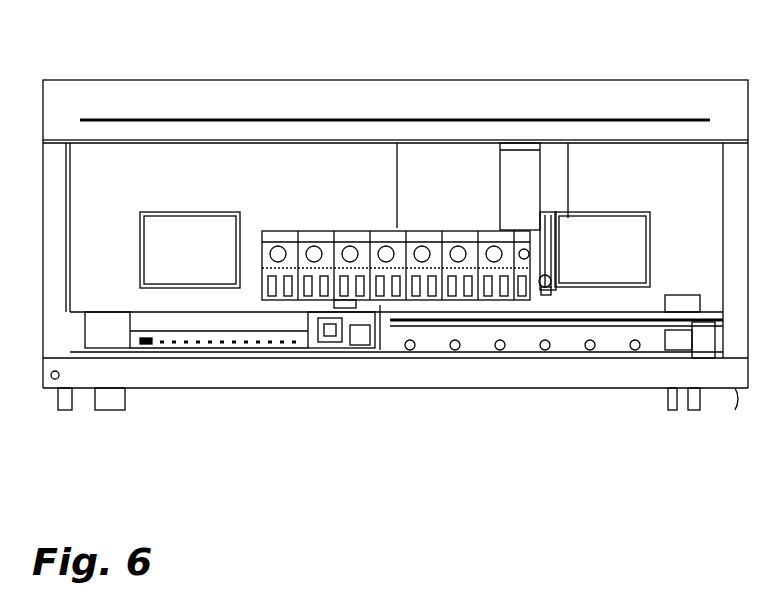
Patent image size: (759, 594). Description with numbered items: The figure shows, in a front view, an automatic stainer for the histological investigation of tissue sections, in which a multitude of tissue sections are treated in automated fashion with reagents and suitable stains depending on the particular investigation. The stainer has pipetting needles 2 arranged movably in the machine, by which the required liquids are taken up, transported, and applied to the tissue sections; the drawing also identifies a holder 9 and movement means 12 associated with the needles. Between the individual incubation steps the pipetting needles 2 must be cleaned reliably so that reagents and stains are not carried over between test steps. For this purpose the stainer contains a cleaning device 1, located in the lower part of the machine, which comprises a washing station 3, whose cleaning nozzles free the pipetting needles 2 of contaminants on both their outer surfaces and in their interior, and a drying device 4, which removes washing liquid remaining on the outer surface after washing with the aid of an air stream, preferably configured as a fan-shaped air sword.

The cleaning device 1 is at (310, 358).
The pipetting needle 2 is at (548, 294).
The washing station 3 is at (354, 337).
The drying device 4 is at (341, 328).
The holder 9 is at (551, 280).
The movement means 12 is at (547, 208).